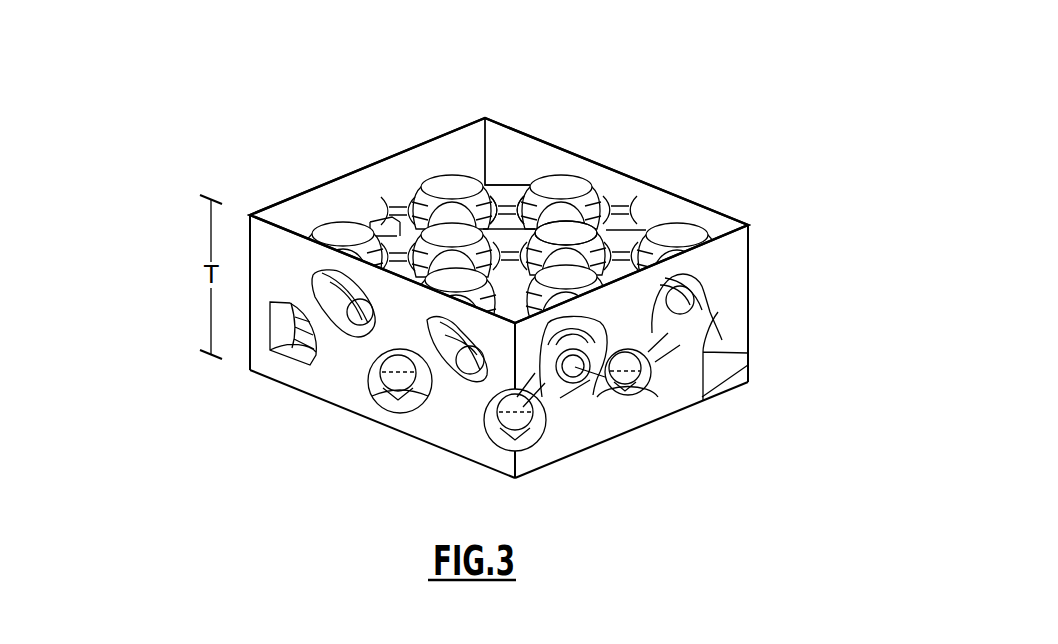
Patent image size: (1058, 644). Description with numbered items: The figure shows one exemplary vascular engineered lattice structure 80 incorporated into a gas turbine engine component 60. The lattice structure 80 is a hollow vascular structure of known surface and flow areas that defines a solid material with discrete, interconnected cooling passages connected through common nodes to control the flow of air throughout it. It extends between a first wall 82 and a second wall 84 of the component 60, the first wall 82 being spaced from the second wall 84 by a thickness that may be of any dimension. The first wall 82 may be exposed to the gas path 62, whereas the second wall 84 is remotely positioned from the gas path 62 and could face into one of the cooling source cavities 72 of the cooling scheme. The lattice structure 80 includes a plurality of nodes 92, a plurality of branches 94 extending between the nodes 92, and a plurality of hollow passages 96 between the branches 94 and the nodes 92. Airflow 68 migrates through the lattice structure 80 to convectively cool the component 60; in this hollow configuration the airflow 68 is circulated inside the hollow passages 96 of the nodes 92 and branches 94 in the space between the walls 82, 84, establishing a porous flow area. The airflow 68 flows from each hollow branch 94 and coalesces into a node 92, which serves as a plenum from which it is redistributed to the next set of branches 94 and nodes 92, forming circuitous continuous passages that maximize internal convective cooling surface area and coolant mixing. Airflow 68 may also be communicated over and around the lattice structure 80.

The component 60 is at (552, 87).
The gas path 62 is at (200, 137).
The airflow 68 is at (560, 230).
The cooling source cavity 72 is at (459, 511).
The vascular engineered lattice structure 80 is at (421, 176).
The first wall 82 is at (323, 200).
The second wall 84 is at (325, 403).
The node 92 is at (567, 190).
The branch 94 is at (502, 193).
The hollow passage 96 is at (508, 210).